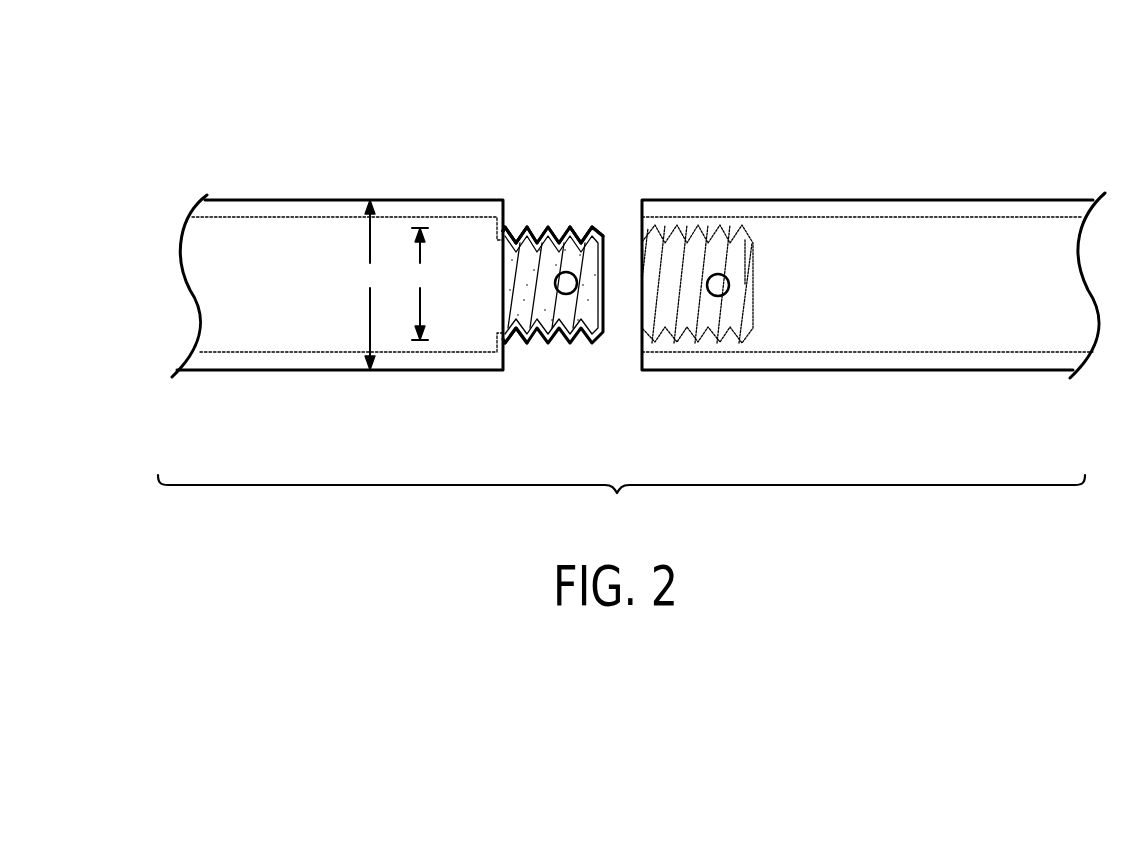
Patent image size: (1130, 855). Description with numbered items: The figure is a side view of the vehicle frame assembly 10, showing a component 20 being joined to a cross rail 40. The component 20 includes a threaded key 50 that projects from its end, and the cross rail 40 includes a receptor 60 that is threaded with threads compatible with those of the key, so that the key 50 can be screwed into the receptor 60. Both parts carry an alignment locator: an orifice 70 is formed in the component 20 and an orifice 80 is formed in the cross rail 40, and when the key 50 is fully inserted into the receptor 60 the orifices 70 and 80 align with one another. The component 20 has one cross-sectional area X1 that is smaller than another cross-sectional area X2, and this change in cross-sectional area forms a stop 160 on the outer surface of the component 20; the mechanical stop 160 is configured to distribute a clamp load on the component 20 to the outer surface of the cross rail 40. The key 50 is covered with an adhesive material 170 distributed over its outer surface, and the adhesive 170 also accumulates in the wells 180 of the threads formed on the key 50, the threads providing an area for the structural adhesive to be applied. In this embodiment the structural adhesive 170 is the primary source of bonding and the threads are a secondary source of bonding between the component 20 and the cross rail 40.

The vehicle frame assembly 10 is at (621, 500).
The component 20 is at (284, 205).
The cross rail 40 is at (887, 206).
The threaded key 50 is at (548, 343).
The receptor 60 is at (745, 344).
The orifice 70 is at (573, 288).
The orifice 80 is at (708, 276).
The stop 160 is at (518, 190).
The adhesive material 170 is at (548, 229).
The wells 180 is at (582, 222).
The cross-sectional area X1 is at (420, 284).
The cross-sectional area X2 is at (368, 285).